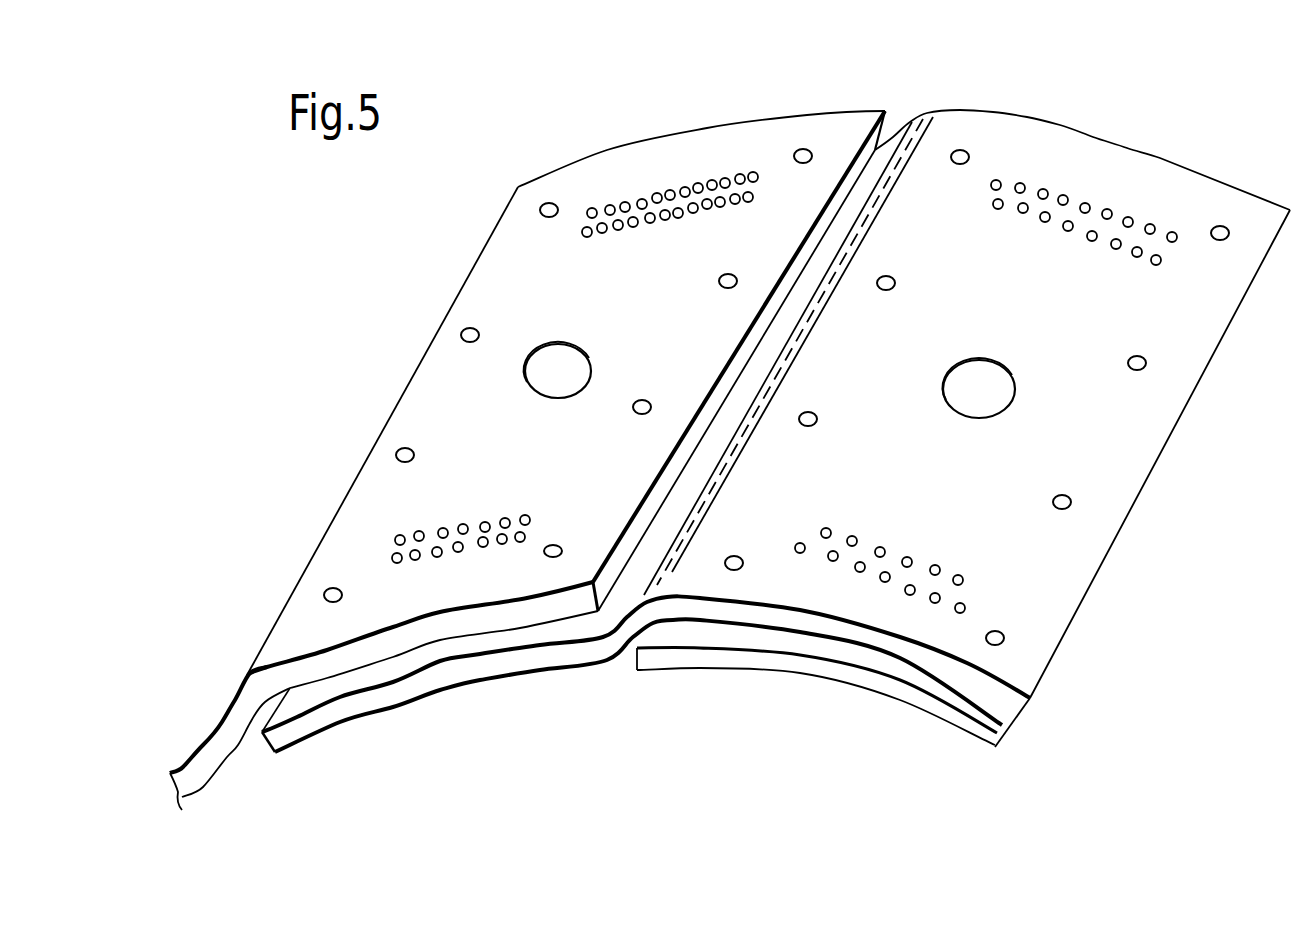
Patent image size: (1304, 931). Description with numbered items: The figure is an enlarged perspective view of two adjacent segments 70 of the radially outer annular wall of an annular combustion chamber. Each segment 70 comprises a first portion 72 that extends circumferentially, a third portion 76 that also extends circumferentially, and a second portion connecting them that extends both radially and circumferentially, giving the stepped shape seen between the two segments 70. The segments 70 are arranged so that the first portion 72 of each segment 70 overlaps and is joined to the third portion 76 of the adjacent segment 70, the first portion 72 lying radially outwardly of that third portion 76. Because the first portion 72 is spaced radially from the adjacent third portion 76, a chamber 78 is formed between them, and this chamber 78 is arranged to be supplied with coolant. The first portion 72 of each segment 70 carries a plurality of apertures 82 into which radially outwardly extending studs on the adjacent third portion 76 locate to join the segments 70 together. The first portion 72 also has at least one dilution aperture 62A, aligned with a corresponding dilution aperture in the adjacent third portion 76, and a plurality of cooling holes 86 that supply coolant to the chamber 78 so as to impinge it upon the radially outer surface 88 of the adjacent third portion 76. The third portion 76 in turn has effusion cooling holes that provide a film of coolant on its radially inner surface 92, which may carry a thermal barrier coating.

The segment 70 is at (712, 128).
The first portion 72 is at (815, 125).
The aperture 82 is at (545, 205).
The cooling holes 86 is at (675, 207).
The dilution aperture 62A is at (555, 373).
The third portion 76 is at (517, 660).
The chamber 78 is at (320, 690).
The radially outer surface 88 is at (373, 672).
The radially inner surface 92 is at (472, 683).